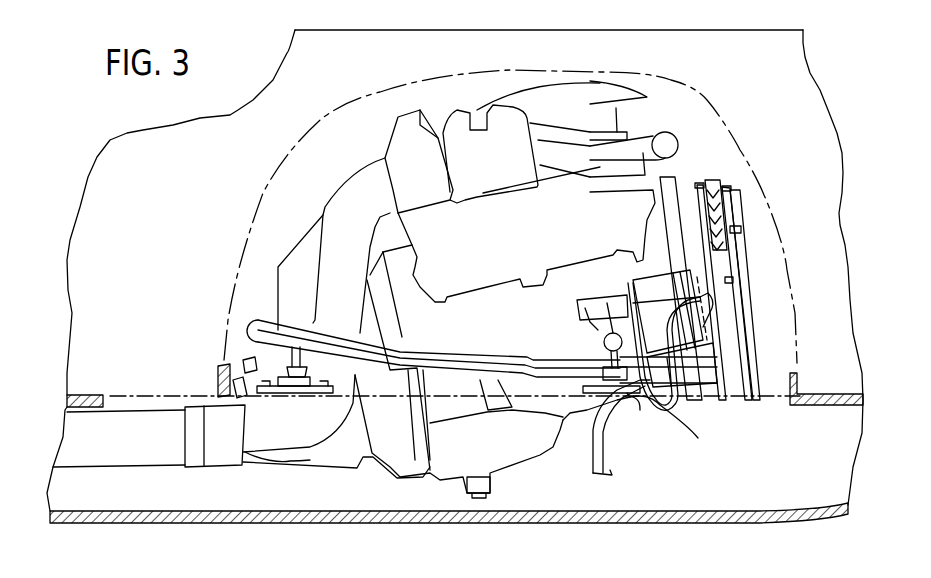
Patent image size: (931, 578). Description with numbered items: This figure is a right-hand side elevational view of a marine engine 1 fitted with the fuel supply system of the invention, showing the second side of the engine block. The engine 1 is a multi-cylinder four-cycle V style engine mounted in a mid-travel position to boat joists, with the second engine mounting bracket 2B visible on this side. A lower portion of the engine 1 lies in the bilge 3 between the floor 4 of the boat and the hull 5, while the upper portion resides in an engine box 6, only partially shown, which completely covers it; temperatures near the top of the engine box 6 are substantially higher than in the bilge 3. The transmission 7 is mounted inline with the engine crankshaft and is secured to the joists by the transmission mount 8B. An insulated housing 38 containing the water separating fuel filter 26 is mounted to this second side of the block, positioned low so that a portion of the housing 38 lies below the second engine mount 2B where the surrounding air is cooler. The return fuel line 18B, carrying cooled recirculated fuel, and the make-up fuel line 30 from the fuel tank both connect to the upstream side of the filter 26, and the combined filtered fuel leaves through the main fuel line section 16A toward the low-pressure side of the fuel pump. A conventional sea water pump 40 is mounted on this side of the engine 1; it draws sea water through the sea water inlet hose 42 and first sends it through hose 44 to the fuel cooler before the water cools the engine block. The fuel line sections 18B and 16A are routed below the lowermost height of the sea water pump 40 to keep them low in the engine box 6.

The marine engine 1 is at (681, 166).
The engine mounting bracket 2B is at (625, 397).
The bilge 3 is at (755, 487).
The floor 4 is at (87, 397).
The hull 5 is at (142, 523).
The engine box 6 is at (707, 100).
The transmission 7 is at (267, 363).
The transmission mount 8B is at (300, 397).
The main fuel line section 16A is at (633, 397).
The return fuel line 18B is at (680, 407).
The water separating fuel filter 26 is at (693, 293).
The make-up fuel line 30 is at (745, 308).
The insulated housing 38 is at (700, 280).
The sea water pump 40 is at (722, 385).
The sea water inlet hose 42 is at (603, 450).
The hose 44 is at (490, 360).